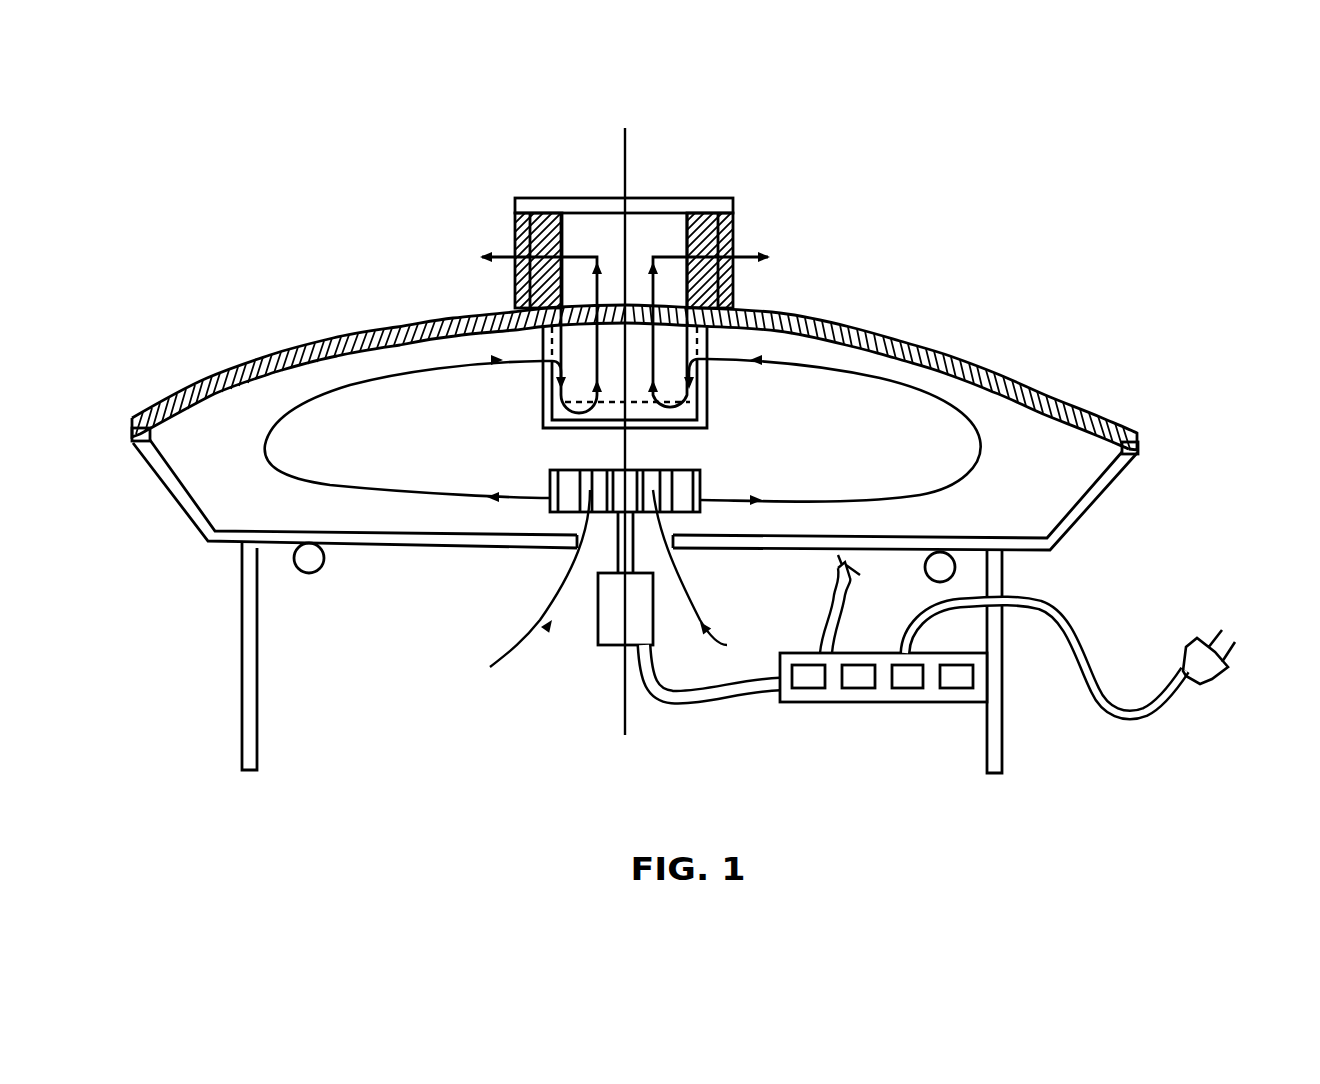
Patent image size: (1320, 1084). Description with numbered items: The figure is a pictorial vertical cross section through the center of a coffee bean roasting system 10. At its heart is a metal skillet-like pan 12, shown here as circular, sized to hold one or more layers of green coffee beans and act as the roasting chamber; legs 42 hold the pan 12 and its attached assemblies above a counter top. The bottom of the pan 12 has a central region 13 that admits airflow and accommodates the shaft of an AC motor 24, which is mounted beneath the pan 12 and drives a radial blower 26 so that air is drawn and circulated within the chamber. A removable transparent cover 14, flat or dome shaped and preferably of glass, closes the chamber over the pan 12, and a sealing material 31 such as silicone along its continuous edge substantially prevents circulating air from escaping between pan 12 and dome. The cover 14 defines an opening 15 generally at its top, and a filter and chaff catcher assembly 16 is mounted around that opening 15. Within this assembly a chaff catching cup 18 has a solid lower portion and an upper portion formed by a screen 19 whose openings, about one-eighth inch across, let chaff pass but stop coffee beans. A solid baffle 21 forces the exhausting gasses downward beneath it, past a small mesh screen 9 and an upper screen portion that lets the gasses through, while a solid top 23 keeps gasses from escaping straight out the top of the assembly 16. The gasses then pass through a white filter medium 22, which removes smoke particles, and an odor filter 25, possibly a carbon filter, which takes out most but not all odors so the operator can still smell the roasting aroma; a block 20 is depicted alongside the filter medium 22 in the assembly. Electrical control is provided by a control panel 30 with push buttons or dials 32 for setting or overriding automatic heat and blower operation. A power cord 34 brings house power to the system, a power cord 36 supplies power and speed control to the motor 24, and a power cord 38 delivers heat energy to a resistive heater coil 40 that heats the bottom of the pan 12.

The small mesh screen 9 is at (668, 402).
The coffee bean roasting system 10 is at (992, 193).
The pan 12 is at (1098, 502).
The gap in bottom plate 13 is at (588, 544).
The cover 14 is at (1000, 388).
The opening 15 is at (636, 307).
The filter and chaff catcher assembly 16 is at (745, 203).
The chaff catching cup 18 is at (543, 420).
The screen 19 is at (540, 362).
The motor 20 is at (550, 225).
The solid baffle 21 is at (690, 350).
The filter medium 22 is at (548, 228).
The solid top 23 is at (712, 198).
The motor 24 is at (606, 636).
The odor filter 25 is at (735, 238).
The radial blower 26 is at (700, 486).
The control panel 30 is at (838, 708).
The sealing material 31 is at (1133, 446).
The push buttons or dials 32 is at (960, 680).
The power cord 34 is at (1142, 722).
The power cord 36 is at (713, 700).
The power cord 38 is at (822, 607).
The resistive heater coil 40 is at (309, 574).
The legs 42 is at (242, 692).